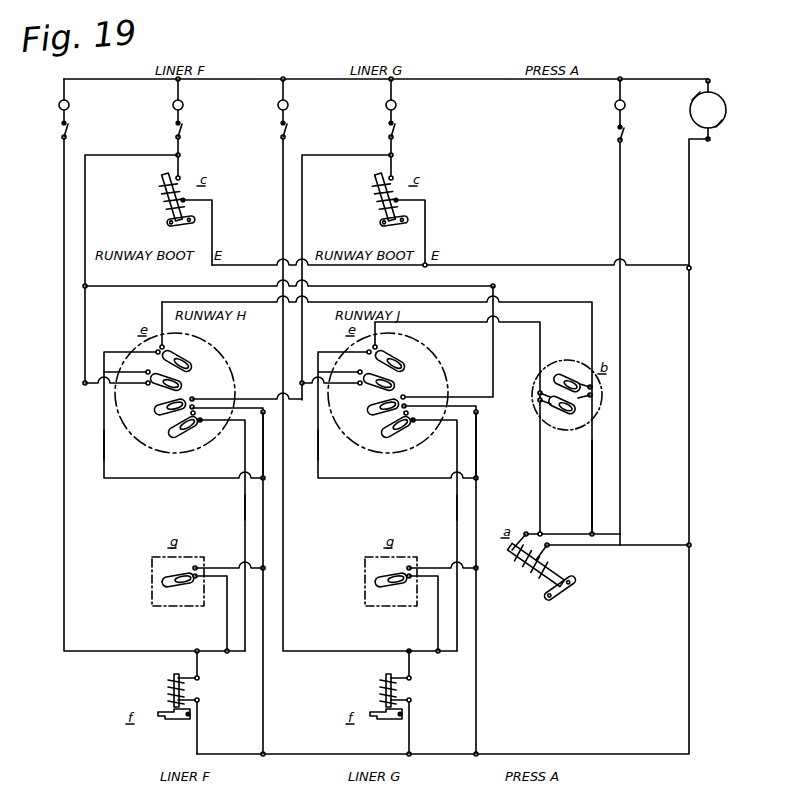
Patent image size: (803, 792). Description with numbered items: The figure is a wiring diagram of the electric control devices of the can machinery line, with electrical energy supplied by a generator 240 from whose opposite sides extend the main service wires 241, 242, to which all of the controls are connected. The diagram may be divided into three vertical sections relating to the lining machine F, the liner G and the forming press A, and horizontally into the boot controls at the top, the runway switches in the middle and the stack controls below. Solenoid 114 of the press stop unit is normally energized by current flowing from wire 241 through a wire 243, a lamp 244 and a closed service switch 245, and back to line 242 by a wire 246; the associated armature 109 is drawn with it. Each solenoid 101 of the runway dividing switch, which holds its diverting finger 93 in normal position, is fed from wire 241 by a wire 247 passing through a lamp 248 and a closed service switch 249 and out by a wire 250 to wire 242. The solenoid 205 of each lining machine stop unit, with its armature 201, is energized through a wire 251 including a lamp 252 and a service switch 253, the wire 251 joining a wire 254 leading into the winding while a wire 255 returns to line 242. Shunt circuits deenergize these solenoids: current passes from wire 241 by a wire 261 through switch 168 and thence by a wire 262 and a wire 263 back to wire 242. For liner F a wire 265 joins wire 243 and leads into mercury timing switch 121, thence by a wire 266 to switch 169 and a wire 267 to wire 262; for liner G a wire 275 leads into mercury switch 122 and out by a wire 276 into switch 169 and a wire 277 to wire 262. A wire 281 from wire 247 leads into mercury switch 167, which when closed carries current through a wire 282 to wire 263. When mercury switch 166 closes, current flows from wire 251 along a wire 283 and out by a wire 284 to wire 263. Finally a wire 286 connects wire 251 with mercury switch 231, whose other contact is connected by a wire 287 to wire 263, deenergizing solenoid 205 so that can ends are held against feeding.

The generator 240 is at (718, 95).
The main service wire 241 is at (680, 72).
The main service wire 242 is at (690, 345).
The wire 243 is at (618, 98).
The lamp 244 is at (614, 107).
The service switch 245 is at (618, 128).
The wire 246 is at (648, 547).
The wire 247 is at (182, 97).
The lamp 248 is at (184, 112).
The service switch 249 is at (184, 128).
The wire 250 is at (214, 224).
The wire 251 is at (62, 97).
The lamp 252 is at (58, 112).
The service switch 253 is at (62, 128).
The wire 254 is at (200, 673).
The wire 255 is at (199, 728).
The wire 261 is at (87, 208).
The wire 262 is at (103, 435).
The wire 263 is at (266, 669).
The wire 265 is at (590, 482).
The wire 266 is at (534, 302).
The wire 267 is at (110, 352).
The wire 275 is at (538, 461).
The wire 276 is at (457, 323).
The wire 277 is at (330, 343).
The wire 281 is at (304, 208).
The wire 282 is at (248, 399).
The wire 283 is at (244, 509).
The wire 284 is at (239, 426).
The wire 286 is at (226, 626).
The wire 287 is at (221, 565).
The solenoid 101 is at (165, 188).
The diverting finger 93 is at (167, 222).
The relay a armature 109 is at (562, 592).
The solenoid 114 is at (525, 572).
The mercury timing switch 121 is at (570, 372).
The mercury switch 122 is at (566, 425).
The mercury switch 166 is at (170, 432).
The mercury switch 167 is at (156, 408).
The switch 168 is at (183, 384).
The switch 169 is at (183, 362).
The relay f armature 201 is at (175, 721).
The solenoid 205 is at (172, 684).
The mercury switch 231 is at (166, 577).